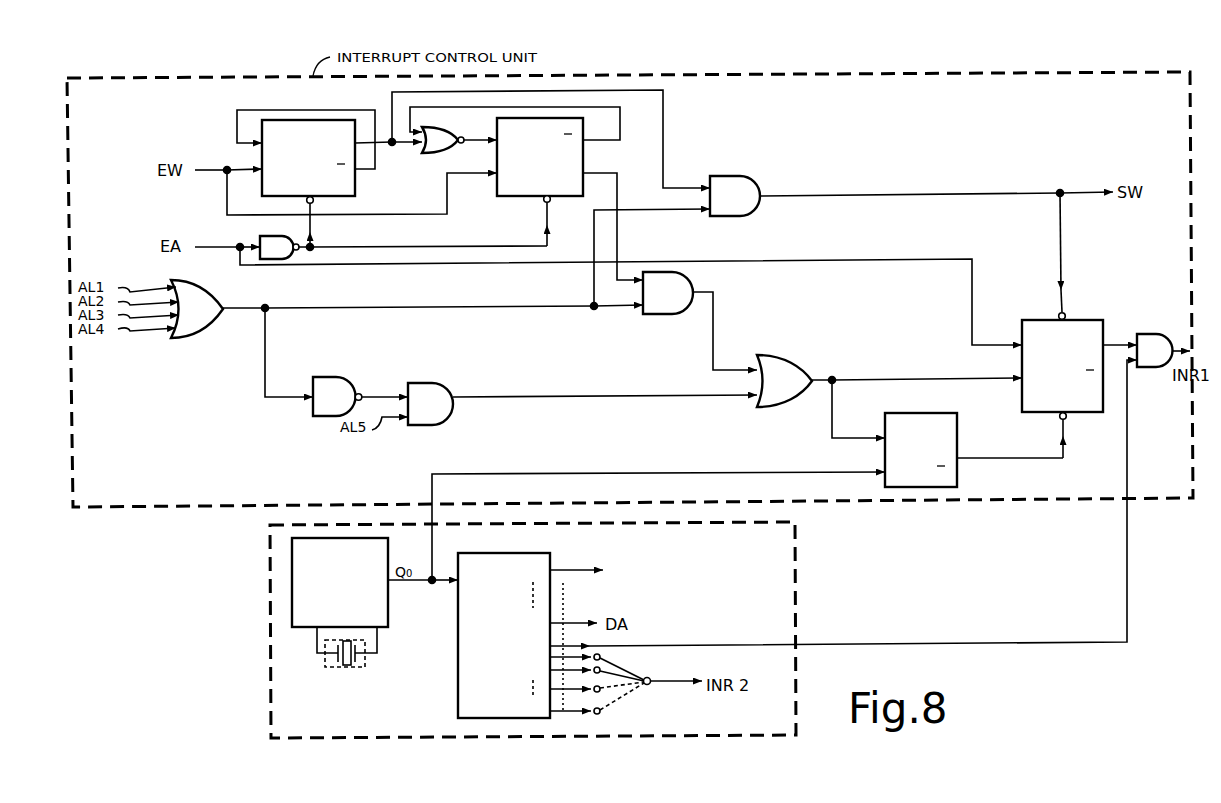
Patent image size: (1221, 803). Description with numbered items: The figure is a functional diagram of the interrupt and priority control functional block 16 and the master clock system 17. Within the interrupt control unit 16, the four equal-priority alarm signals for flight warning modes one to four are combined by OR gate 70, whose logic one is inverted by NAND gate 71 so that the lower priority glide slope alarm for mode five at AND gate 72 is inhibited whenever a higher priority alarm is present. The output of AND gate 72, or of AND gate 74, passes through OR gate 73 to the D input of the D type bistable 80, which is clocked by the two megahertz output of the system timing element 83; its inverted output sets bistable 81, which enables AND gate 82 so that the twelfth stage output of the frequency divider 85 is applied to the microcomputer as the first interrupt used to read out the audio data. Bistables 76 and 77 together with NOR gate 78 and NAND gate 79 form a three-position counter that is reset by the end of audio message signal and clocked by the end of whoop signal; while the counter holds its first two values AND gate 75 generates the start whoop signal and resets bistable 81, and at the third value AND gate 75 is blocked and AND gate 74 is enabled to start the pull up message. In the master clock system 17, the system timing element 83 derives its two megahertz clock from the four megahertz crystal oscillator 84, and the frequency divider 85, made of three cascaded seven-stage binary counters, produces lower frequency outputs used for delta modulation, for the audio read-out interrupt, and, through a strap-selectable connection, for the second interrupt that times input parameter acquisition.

The interrupt and priority control functional block 16 is at (120, 77).
The master clock system 17 is at (268, 562).
The OR gate 70 is at (201, 299).
The NAND gate 71 is at (328, 388).
The AND gate 72 is at (430, 388).
The OR gate 73 is at (778, 367).
The AND gate 74 is at (694, 287).
The AND gate 75 is at (741, 178).
The bistable 76 is at (358, 184).
The bistable 77 is at (585, 155).
The NOR gate 78 is at (440, 136).
The NAND gate 79 is at (262, 242).
The D type bistable 80 is at (918, 415).
The bistable 81 is at (1026, 326).
The AND gate 82 is at (1148, 336).
The system timing element 83 is at (388, 619).
The crystal oscillator 84 is at (326, 658).
The frequency divider 85 is at (503, 562).